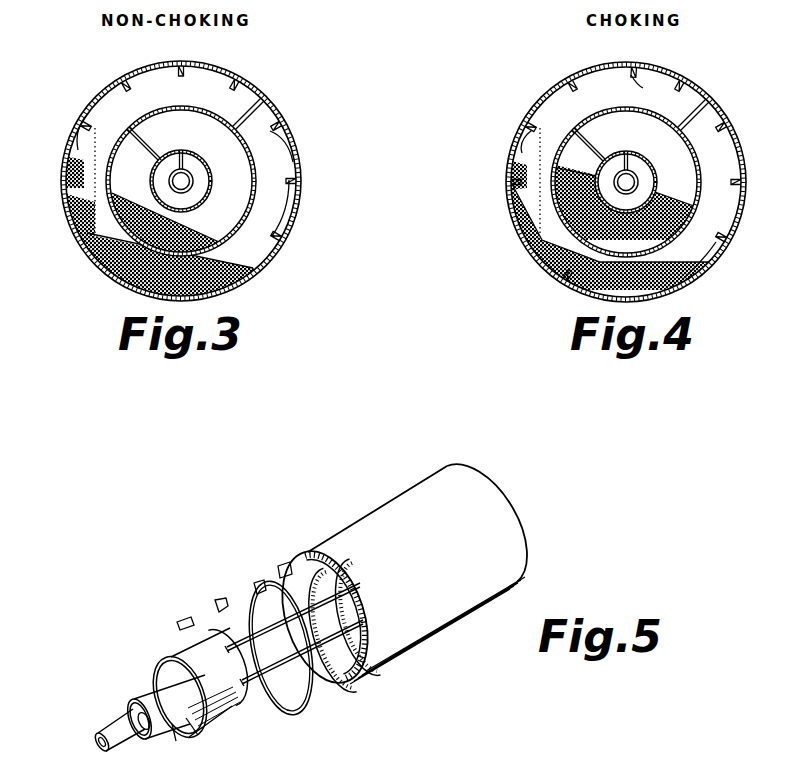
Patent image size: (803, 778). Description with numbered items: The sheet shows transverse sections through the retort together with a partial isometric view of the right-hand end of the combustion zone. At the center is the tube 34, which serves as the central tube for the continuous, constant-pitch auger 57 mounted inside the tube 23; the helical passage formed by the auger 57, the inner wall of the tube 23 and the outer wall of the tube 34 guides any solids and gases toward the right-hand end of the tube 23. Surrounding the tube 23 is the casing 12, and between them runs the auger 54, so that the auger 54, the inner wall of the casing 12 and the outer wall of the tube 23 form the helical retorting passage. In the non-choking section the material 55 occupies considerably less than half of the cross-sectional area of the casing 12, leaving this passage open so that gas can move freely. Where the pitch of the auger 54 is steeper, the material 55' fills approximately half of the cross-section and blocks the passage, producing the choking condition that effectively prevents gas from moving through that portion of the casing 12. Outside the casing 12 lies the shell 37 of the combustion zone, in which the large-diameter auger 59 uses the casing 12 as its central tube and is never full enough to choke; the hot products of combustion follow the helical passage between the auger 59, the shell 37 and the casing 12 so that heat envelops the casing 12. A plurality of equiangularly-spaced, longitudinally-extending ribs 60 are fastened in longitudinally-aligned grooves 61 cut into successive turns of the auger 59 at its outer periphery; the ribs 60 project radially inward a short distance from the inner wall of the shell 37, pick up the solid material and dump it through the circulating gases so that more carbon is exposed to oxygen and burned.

In FIG. 3, the casing 12 is at (160, 110).
In FIG. 4, the casing 12 is at (645, 108).
In FIG. 5, the casing 12 is at (244, 677).
In FIG. 3, the tube 23 is at (210, 193).
In FIG. 4, the tube 23 is at (655, 194).
In FIG. 5, the tube 23 is at (158, 713).
In FIG. 3, the tube 34 is at (199, 173).
In FIG. 4, the tube 34 is at (641, 172).
In FIG. 5, the tube 34 is at (118, 733).
In FIG. 3, the shell 37 is at (104, 96).
In FIG. 4, the shell 37 is at (548, 98).
In FIG. 5, the shell 37 is at (406, 584).
In FIG. 3, the auger 54 is at (148, 146).
In FIG. 4, the auger 54 is at (588, 146).
In FIG. 5, the auger 54 is at (175, 668).
In FIG. 3, the material 55 is at (180, 227).
In FIG. 4, the material 55' is at (615, 225).
In FIG. 3, the auger 57 is at (186, 160).
In FIG. 4, the auger 57 is at (633, 161).
In FIG. 5, the auger 57 is at (144, 731).
In FIG. 3, the auger 59 is at (262, 113).
In FIG. 4, the auger 59 is at (708, 113).
In FIG. 5, the auger 59 is at (247, 729).
In FIG. 3, the ribs 60 is at (165, 69).
In FIG. 4, the ribs 60 is at (675, 82).
In FIG. 5, the ribs 60 is at (278, 569).
In FIG. 5, the grooves 61 is at (257, 585).